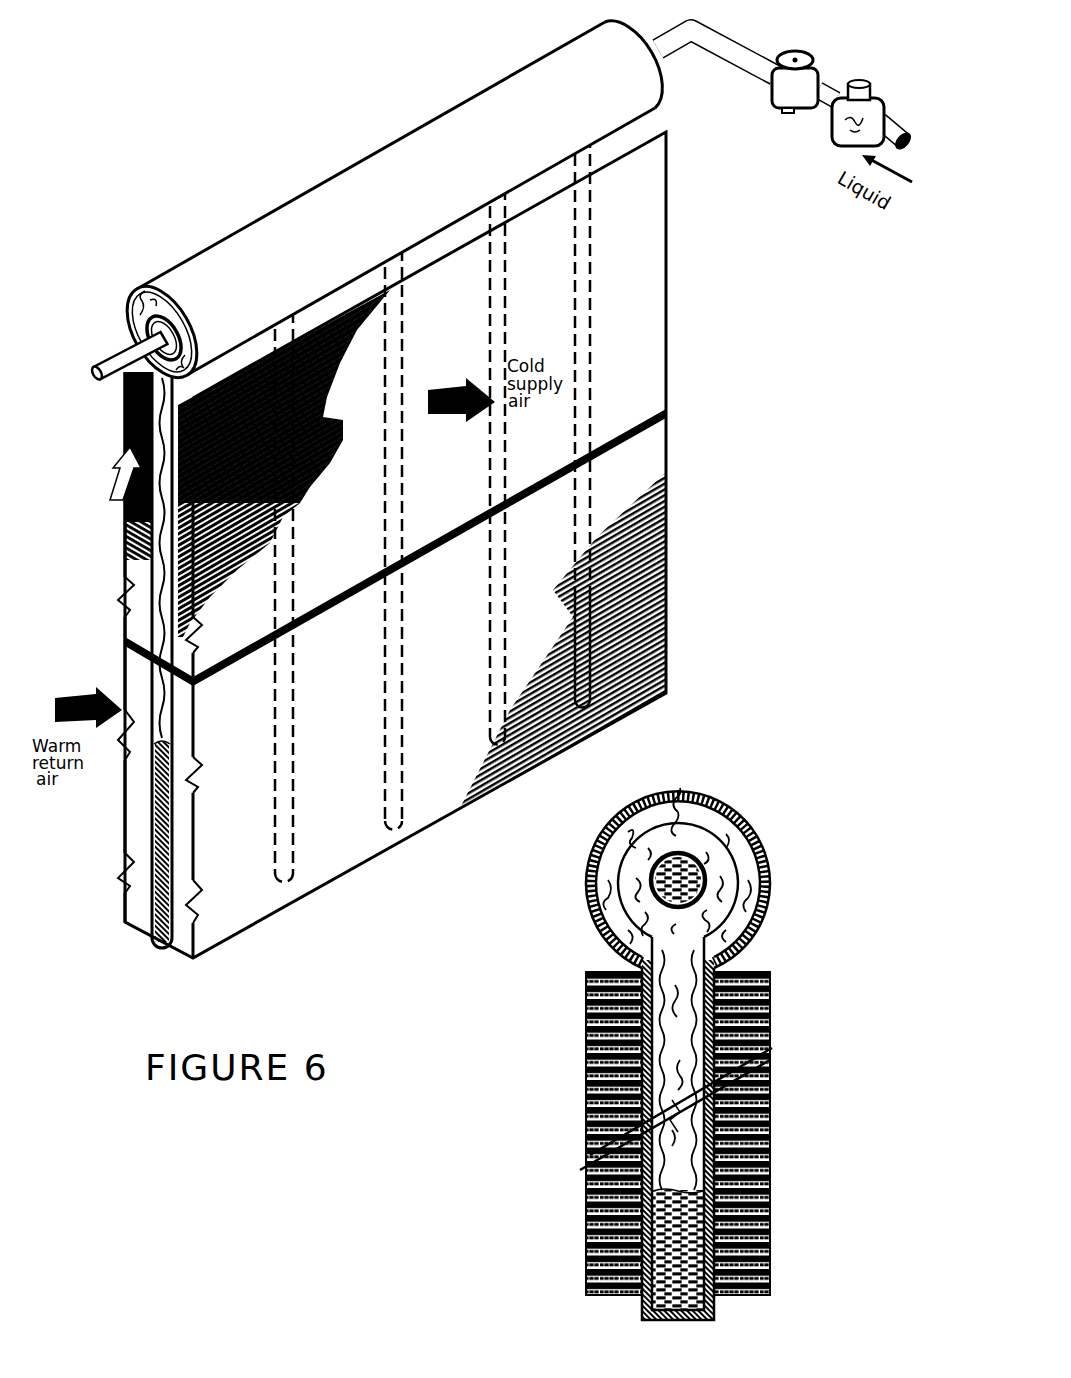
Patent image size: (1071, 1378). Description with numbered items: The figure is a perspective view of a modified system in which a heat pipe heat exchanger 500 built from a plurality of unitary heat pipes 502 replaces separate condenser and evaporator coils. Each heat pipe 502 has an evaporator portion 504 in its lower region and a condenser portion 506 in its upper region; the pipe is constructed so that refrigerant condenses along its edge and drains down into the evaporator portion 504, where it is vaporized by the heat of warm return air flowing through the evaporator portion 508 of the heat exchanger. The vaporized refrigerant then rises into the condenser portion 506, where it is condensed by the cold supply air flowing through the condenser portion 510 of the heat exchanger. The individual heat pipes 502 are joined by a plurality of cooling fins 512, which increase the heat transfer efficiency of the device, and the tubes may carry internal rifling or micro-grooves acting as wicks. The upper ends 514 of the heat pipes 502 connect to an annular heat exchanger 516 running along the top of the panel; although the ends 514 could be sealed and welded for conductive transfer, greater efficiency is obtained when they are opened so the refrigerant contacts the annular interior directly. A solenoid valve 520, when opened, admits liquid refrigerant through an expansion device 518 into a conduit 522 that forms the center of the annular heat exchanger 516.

The heat pipe heat exchanger 500 is at (667, 550).
The heat pipes 502 is at (587, 170).
The evaporator portion 504 is at (167, 737).
The condenser portion 506 is at (148, 600).
The evaporator portion of the heat pipe heat exchanger 508 is at (640, 712).
The condenser portion of the heat exchanger 510 is at (650, 264).
The cooling fins 512 is at (127, 494).
The upper ends of the heat pipes 514 is at (182, 362).
The annular heat exchanger 516 is at (348, 148).
The expansion device 518 is at (787, 52).
The solenoid valve 520 is at (852, 84).
The conduit 522 is at (133, 352).